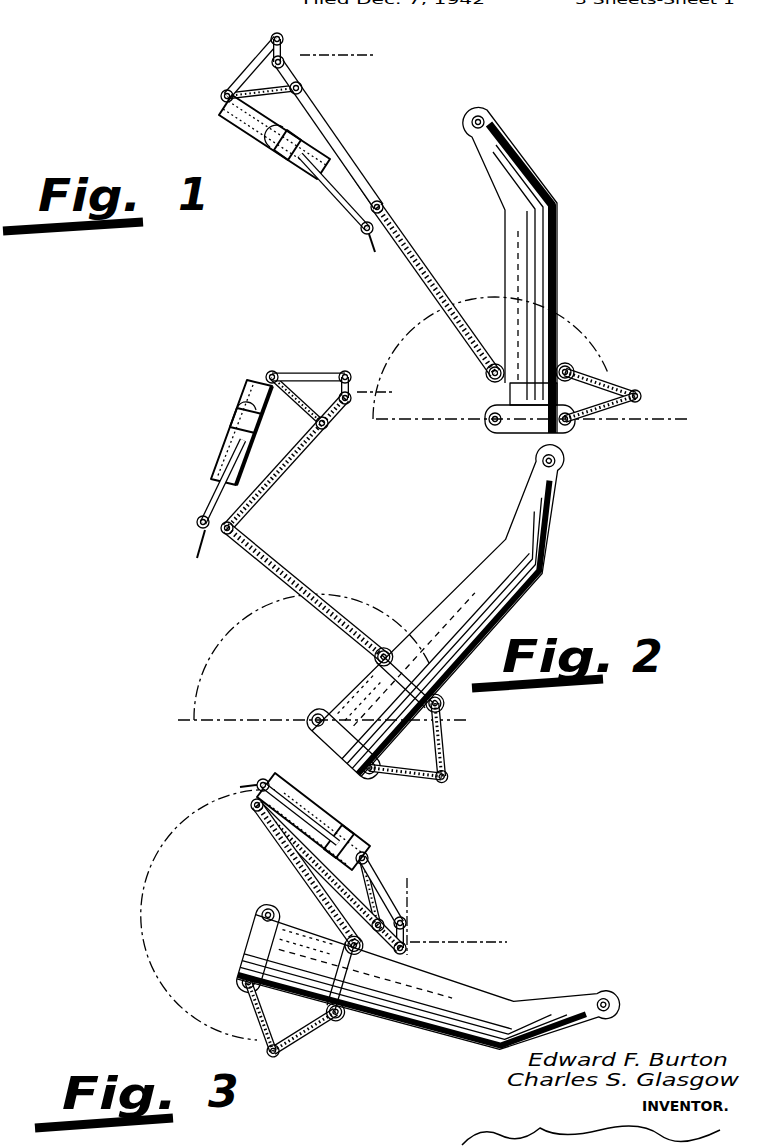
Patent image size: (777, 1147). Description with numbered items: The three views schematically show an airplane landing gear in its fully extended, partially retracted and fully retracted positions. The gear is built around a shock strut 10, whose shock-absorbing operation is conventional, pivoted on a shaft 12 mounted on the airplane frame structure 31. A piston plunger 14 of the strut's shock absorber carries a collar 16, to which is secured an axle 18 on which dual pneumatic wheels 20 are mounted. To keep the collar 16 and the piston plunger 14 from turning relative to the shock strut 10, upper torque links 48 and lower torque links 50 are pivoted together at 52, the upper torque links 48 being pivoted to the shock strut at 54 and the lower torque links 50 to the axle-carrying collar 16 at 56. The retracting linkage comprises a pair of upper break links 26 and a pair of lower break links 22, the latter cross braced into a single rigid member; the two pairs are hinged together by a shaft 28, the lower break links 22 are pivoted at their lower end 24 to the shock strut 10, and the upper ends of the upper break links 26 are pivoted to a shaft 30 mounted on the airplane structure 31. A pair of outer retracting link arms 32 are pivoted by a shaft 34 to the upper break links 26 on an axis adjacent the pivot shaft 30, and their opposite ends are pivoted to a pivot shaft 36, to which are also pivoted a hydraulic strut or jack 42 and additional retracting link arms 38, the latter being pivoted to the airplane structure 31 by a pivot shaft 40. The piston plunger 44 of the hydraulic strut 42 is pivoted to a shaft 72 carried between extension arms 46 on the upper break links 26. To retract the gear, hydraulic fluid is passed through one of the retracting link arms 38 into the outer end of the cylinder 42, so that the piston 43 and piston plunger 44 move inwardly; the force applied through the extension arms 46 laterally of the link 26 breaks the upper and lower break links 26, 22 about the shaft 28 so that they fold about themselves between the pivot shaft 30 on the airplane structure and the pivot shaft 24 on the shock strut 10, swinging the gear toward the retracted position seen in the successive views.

In FIG. 1, the shock strut 10 is at (562, 260).
In FIG. 2, the shock strut 10 is at (465, 588).
In FIG. 3, the shock strut 10 is at (470, 992).
In FIG. 1, the shaft 12 is at (465, 123).
In FIG. 2, the shaft 12 is at (533, 460).
In FIG. 3, the shaft 12 is at (605, 993).
In FIG. 1, the piston plunger 14 is at (510, 390).
In FIG. 2, the piston plunger 14 is at (352, 702).
In FIG. 3, the piston plunger 14 is at (308, 996).
In FIG. 1, the collar 16 is at (575, 435).
In FIG. 2, the collar 16 is at (312, 735).
In FIG. 3, the collar 16 is at (262, 945).
In FIG. 1, the axle 18 is at (487, 421).
In FIG. 2, the axle 18 is at (308, 716).
In FIG. 3, the axle 18 is at (258, 915).
In FIG. 1, the dual pneumatic wheels 20 is at (412, 333).
In FIG. 2, the dual pneumatic wheels 20 is at (195, 705).
In FIG. 3, the dual pneumatic wheels 20 is at (143, 965).
In FIG. 1, the lower break links 22 is at (410, 240).
In FIG. 2, the lower break links 22 is at (290, 577).
In FIG. 3, the lower break links 22 is at (306, 889).
In FIG. 1, the pivot shaft 24 is at (494, 363).
In FIG. 2, the pivot shaft 24 is at (388, 648).
In FIG. 3, the pivot shaft 24 is at (372, 950).
In FIG. 1, the upper break links 26 is at (346, 140).
In FIG. 2, the upper break links 26 is at (278, 485).
In FIG. 3, the upper break links 26 is at (293, 868).
In FIG. 1, the shaft 28 is at (382, 201).
In FIG. 2, the shaft 28 is at (236, 529).
In FIG. 3, the shaft 28 is at (255, 813).
In FIG. 1, the shaft 30 is at (285, 64).
In FIG. 2, the shaft 30 is at (350, 406).
In FIG. 3, the shaft 30 is at (412, 947).
In FIG. 1, the airplane frame structure 31 is at (284, 55).
In FIG. 2, the airplane frame structure 31 is at (352, 380).
In FIG. 3, the airplane frame structure 31 is at (413, 918).
In FIG. 1, the outer retracting link arms 32 is at (312, 106).
In FIG. 2, the outer retracting link arms 32 is at (303, 443).
In FIG. 3, the outer retracting link arms 32 is at (390, 895).
In FIG. 1, the shaft 34 is at (303, 90).
In FIG. 2, the shaft 34 is at (330, 430).
In FIG. 3, the shaft 34 is at (408, 904).
In FIG. 1, the pivot shaft 36 is at (220, 94).
In FIG. 2, the pivot shaft 36 is at (270, 369).
In FIG. 3, the pivot shaft 36 is at (372, 862).
In FIG. 1, the additional retracting link arms 38 is at (240, 76).
In FIG. 2, the additional retracting link arms 38 is at (310, 372).
In FIG. 3, the additional retracting link arms 38 is at (381, 890).
In FIG. 1, the pivot shaft 40 is at (270, 40).
In FIG. 2, the pivot shaft 40 is at (344, 369).
In FIG. 3, the pivot shaft 40 is at (410, 925).
In FIG. 1, the hydraulic strut 42 is at (246, 134).
In FIG. 2, the hydraulic strut 42 is at (246, 384).
In FIG. 3, the hydraulic strut 42 is at (350, 823).
In FIG. 1, the piston 43 is at (276, 152).
In FIG. 2, the piston 43 is at (232, 420).
In FIG. 3, the piston 43 is at (352, 840).
In FIG. 1, the piston plunger 44 is at (338, 203).
In FIG. 2, the piston plunger 44 is at (212, 495).
In FIG. 3, the piston plunger 44 is at (320, 818).
In FIG. 1, the extension arms 46 is at (368, 236).
In FIG. 2, the extension arms 46 is at (198, 530).
In FIG. 3, the extension arms 46 is at (256, 782).
In FIG. 1, the upper torque links 48 is at (607, 378).
In FIG. 2, the upper torque links 48 is at (447, 745).
In FIG. 3, the upper torque links 48 is at (335, 1030).
In FIG. 1, the lower torque links 50 is at (642, 400).
In FIG. 2, the lower torque links 50 is at (425, 786).
In FIG. 3, the lower torque links 50 is at (262, 1052).
In FIG. 1, the pivot 52 is at (643, 391).
In FIG. 2, the pivot 52 is at (453, 776).
In FIG. 3, the pivot 52 is at (285, 1057).
In FIG. 1, the pivot 54 is at (575, 360).
In FIG. 2, the pivot 54 is at (447, 705).
In FIG. 3, the pivot 54 is at (347, 1016).
In FIG. 1, the pivot 56 is at (578, 425).
In FIG. 2, the pivot 56 is at (378, 778).
In FIG. 3, the pivot 56 is at (242, 985).
In FIG. 1, the shaft 72 is at (375, 250).
In FIG. 2, the shaft 72 is at (202, 562).
In FIG. 3, the shaft 72 is at (240, 788).